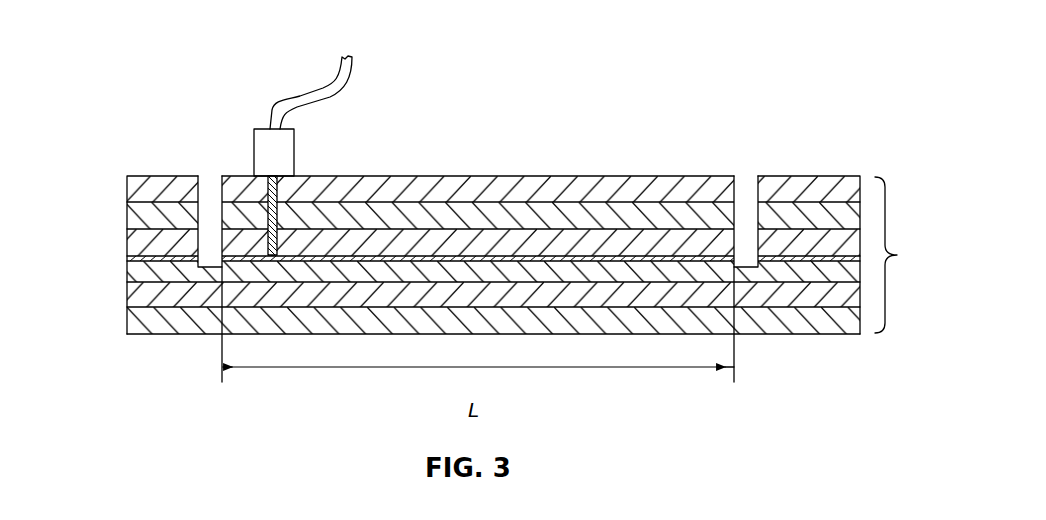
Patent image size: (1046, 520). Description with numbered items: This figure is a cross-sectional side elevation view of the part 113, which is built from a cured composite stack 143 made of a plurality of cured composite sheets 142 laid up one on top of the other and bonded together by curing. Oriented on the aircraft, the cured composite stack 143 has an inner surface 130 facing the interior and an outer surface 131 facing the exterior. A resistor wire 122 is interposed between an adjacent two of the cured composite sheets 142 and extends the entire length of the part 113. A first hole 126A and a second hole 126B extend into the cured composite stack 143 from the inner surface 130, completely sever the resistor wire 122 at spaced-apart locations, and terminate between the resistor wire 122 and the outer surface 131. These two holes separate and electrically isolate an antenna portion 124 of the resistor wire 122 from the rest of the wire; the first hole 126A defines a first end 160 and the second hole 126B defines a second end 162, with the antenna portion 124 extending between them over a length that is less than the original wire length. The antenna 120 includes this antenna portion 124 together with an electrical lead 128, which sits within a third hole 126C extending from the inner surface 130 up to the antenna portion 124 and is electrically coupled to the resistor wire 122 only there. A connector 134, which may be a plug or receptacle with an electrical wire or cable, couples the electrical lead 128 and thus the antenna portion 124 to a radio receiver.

The part 113 is at (158, 172).
The antenna 120 is at (458, 240).
The resistor wire 122 is at (170, 258).
The antenna portion 124 is at (585, 253).
The first hole 126A is at (207, 188).
The second hole 126B is at (739, 183).
The third hole 126C is at (268, 210).
The electrical lead 128 is at (273, 215).
The inner surface 130 is at (833, 176).
The outer surface 131 is at (800, 334).
The connector 134 is at (300, 152).
The cured composite sheets 142 is at (128, 191).
The cured composite stack 143 is at (908, 255).
The first end 160 is at (218, 259).
The second end 162 is at (739, 264).